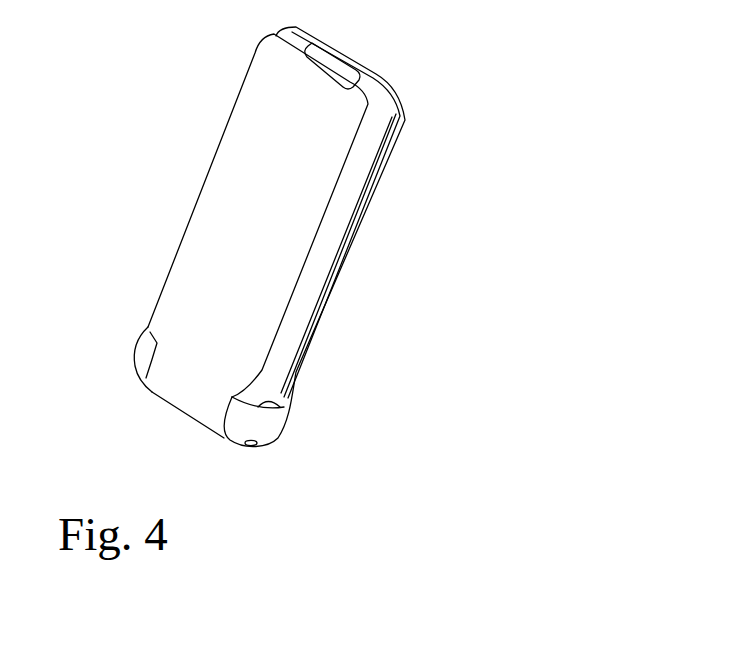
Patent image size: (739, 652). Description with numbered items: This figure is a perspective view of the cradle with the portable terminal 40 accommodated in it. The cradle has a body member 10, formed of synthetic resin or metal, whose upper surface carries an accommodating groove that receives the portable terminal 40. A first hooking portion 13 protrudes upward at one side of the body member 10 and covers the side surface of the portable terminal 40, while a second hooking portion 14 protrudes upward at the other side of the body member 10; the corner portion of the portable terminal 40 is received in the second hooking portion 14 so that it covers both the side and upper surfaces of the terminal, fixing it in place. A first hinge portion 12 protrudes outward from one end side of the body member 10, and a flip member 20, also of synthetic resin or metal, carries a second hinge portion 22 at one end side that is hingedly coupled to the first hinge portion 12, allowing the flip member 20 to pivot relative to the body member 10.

The body member 10 is at (348, 252).
The first hinge portion 12 is at (142, 353).
The first hooking portion 13 is at (337, 56).
The second hooking portion 14 is at (281, 411).
The flip member 20 is at (190, 269).
The second hinge portion 22 is at (181, 405).
The portable terminal 40 is at (313, 297).